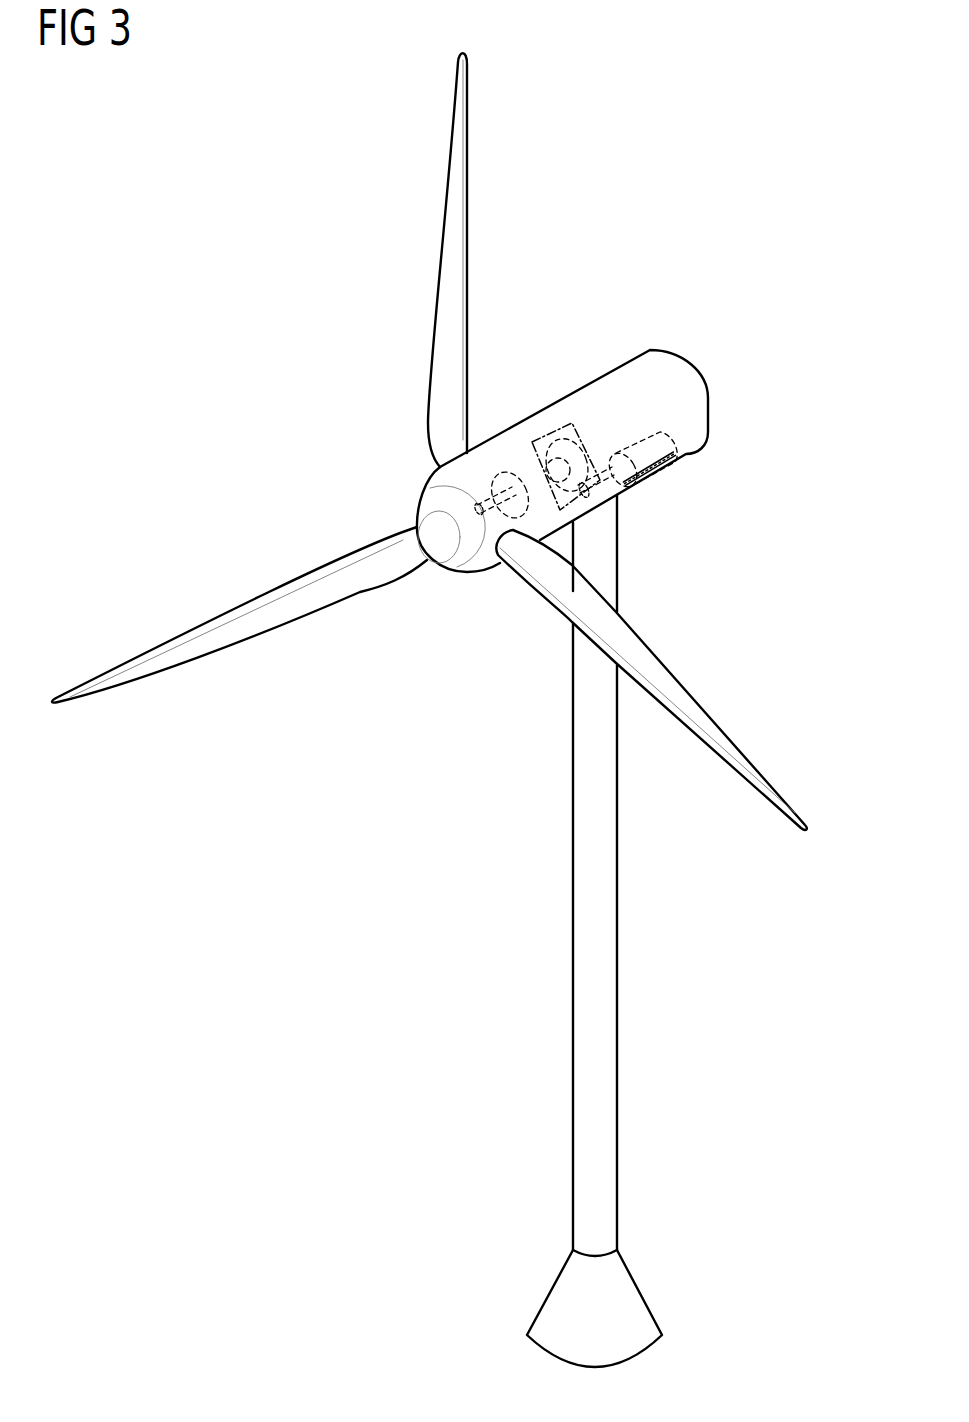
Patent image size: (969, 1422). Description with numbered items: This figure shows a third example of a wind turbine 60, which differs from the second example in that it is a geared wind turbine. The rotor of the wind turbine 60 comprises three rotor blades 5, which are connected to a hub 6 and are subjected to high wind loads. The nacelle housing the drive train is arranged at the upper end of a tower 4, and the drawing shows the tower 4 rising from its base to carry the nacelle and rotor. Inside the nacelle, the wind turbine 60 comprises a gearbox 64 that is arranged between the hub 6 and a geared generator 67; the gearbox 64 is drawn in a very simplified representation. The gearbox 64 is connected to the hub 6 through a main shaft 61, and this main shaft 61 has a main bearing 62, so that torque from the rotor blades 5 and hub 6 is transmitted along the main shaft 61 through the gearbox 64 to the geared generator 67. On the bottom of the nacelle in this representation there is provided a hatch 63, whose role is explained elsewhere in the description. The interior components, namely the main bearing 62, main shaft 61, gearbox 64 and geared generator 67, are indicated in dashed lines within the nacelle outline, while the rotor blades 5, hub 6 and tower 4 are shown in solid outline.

The wind turbine 60 is at (138, 200).
The tower 4 is at (617, 943).
The rotor blades 5 is at (448, 293).
The hub 6 is at (432, 498).
The main shaft 61 is at (532, 482).
The main bearing 62 is at (495, 472).
The hatch 63 is at (655, 478).
The gearbox 64 is at (565, 428).
The geared generator 67 is at (667, 446).